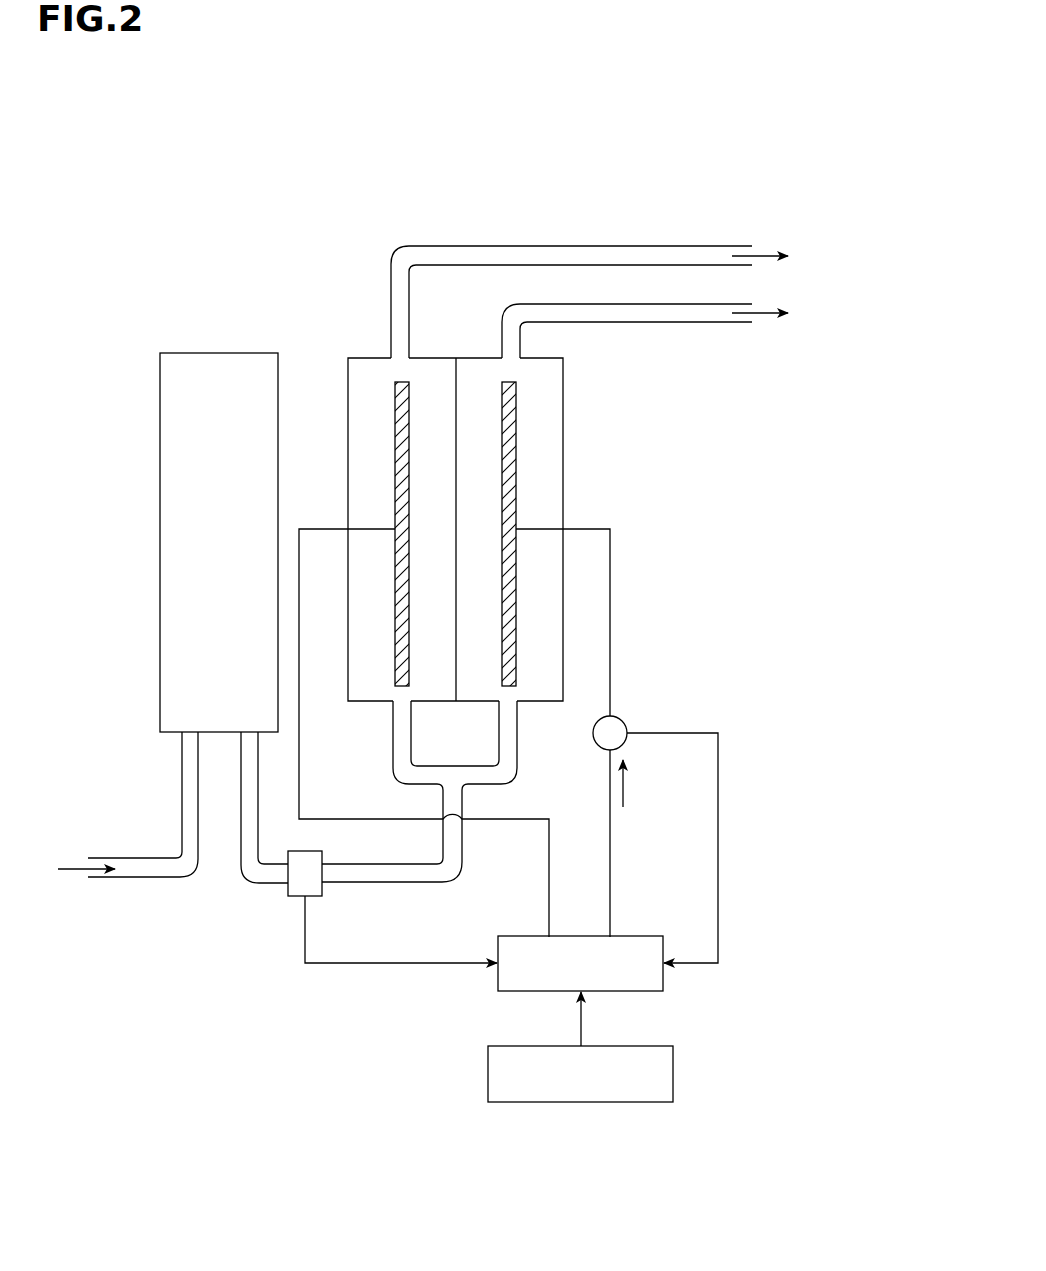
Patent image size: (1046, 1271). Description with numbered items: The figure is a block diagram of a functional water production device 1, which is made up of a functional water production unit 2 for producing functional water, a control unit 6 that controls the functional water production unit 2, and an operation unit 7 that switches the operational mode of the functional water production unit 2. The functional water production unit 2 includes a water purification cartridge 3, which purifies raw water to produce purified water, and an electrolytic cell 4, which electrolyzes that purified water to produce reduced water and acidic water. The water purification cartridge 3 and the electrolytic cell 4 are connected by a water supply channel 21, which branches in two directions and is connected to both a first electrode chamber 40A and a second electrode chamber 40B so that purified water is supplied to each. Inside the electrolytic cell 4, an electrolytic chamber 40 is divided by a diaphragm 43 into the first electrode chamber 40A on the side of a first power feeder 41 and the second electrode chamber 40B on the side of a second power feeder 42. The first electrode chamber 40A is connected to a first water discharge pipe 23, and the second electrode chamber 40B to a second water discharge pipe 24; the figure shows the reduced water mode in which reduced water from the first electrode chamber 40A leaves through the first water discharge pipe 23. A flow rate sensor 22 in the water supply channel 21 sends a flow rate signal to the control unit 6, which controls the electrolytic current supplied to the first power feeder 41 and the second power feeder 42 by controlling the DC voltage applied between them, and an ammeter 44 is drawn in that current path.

The functional water production device 1 is at (778, 70).
The functional water production unit 2 is at (345, 262).
The water purification cartridge 3 is at (220, 352).
The electrolytic cell 4 is at (372, 356).
The water supply channel 21 is at (250, 860).
The flow rate sensor 22 is at (285, 890).
The first water discharge pipe 23 is at (699, 313).
The second water discharge pipe 24 is at (655, 257).
The electrolytic chamber 40 is at (474, 629).
The first electrode chamber 40A is at (537, 495).
The second electrode chamber 40B is at (375, 440).
The first power feeder 41 is at (508, 554).
The second power feeder 42 is at (405, 554).
The diaphragm 43 is at (457, 375).
The ammeter 44 is at (624, 716).
The control unit 6 is at (625, 937).
The operation unit 7 is at (488, 1073).